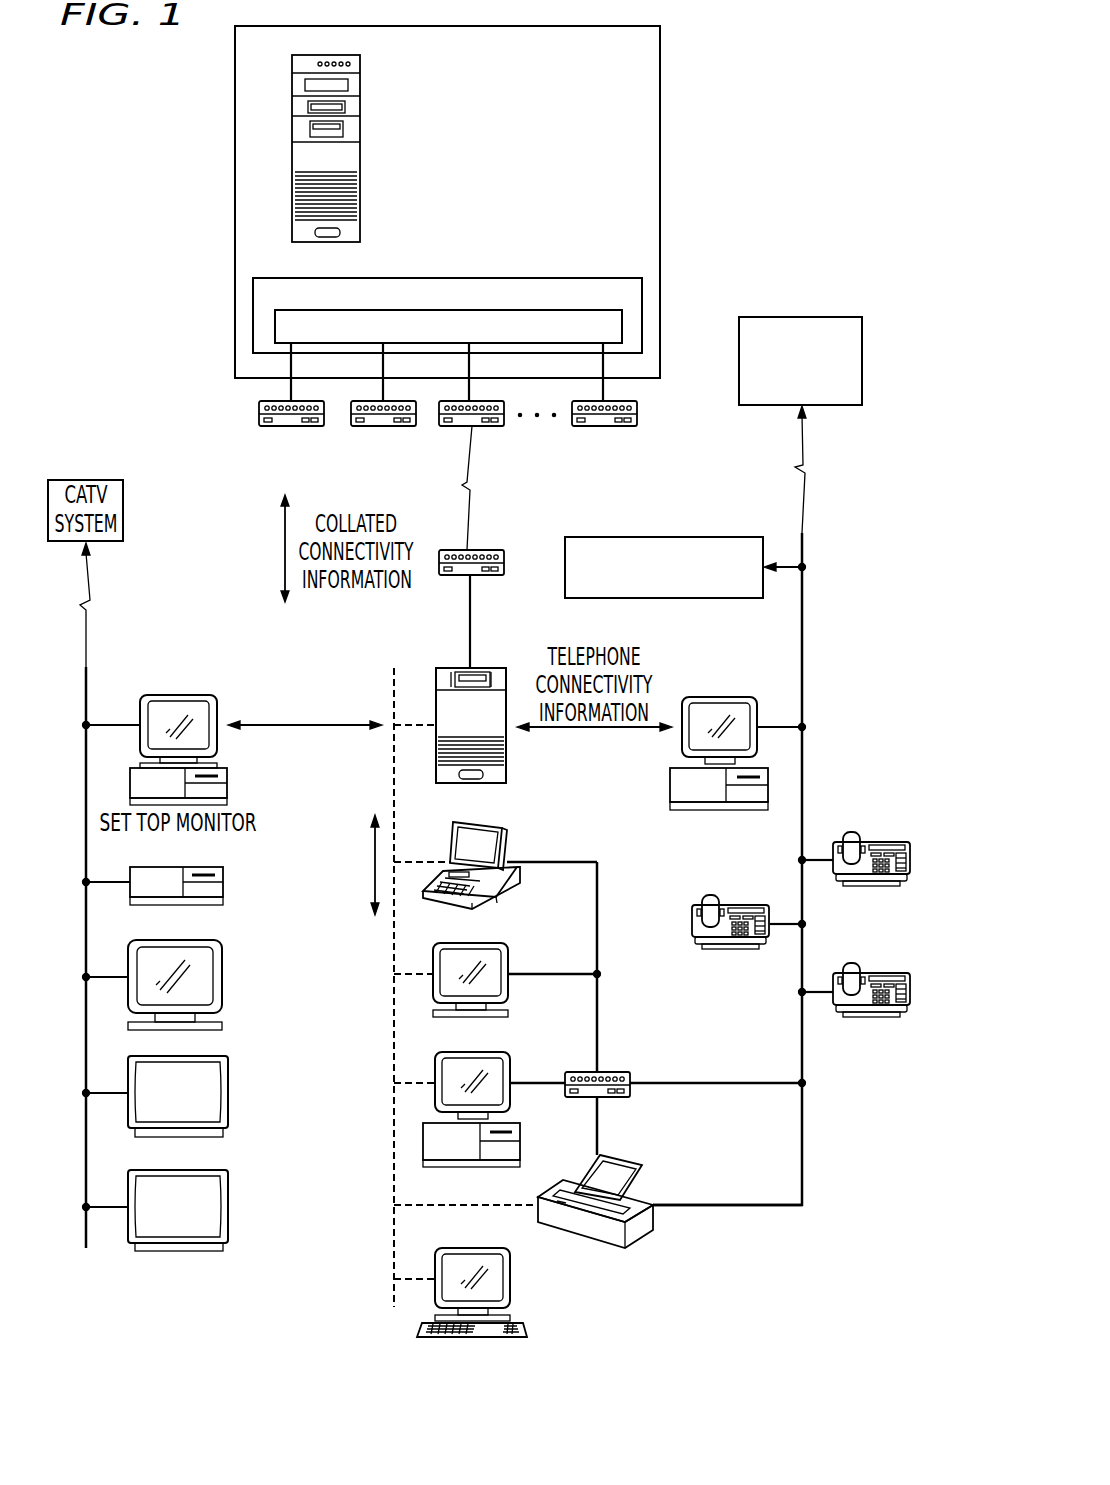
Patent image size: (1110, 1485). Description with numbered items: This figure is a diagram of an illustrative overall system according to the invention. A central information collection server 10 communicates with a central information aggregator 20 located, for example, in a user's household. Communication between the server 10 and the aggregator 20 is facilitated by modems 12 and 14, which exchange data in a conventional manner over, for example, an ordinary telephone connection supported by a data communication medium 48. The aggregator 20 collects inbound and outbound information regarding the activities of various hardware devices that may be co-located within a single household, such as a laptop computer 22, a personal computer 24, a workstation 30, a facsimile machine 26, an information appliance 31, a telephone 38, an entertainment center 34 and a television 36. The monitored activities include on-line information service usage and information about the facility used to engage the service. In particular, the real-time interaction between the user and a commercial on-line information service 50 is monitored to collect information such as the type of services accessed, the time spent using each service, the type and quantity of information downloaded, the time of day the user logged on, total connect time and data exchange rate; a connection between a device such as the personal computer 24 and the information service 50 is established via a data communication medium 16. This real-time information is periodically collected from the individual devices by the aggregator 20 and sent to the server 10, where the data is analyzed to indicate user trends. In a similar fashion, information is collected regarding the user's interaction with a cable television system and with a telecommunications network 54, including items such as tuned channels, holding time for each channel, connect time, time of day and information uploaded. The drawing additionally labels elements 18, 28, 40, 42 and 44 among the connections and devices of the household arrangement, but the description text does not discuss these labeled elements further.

The central information collection server 10 is at (660, 205).
The modem 12 is at (259, 413).
The modem 14 is at (450, 548).
The data communication medium 16 is at (805, 470).
The cable line to CATV system 18 is at (90, 603).
The central information aggregator 20 is at (495, 667).
The laptop computer 22 is at (507, 830).
The personal computer 24 is at (510, 1057).
The facsimile machine 26 is at (645, 1165).
The modem 28 is at (620, 1072).
The workstation 30 is at (510, 957).
The information appliance 31 is at (510, 1282).
The entertainment center 34 is at (180, 905).
The television 36 is at (228, 1095).
The telephone 38 is at (880, 832).
The computer connectivity information 40 is at (372, 908).
The cable connectivity information 42 is at (305, 730).
The telephone-connected computer 44 is at (720, 695).
The data communication medium 48 is at (468, 490).
The commercial on-line information service 50 is at (803, 315).
The telecommunications network 54 is at (667, 535).